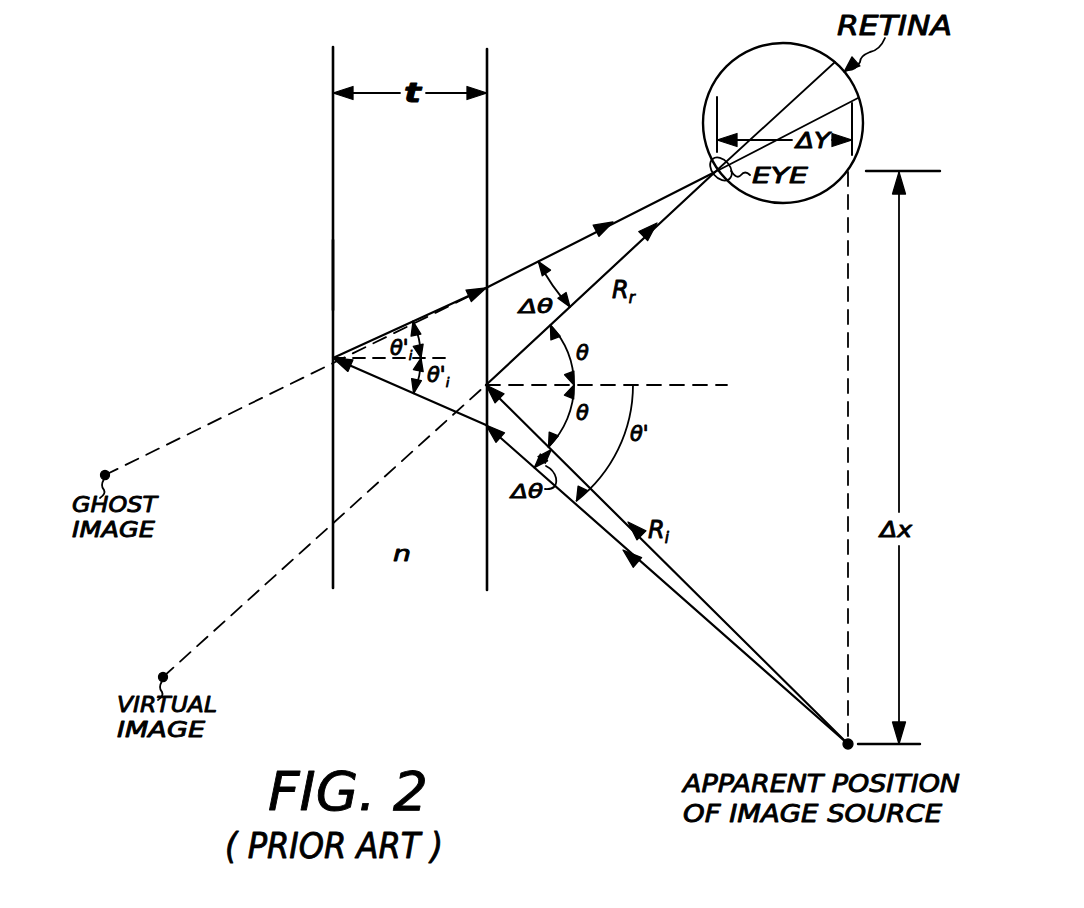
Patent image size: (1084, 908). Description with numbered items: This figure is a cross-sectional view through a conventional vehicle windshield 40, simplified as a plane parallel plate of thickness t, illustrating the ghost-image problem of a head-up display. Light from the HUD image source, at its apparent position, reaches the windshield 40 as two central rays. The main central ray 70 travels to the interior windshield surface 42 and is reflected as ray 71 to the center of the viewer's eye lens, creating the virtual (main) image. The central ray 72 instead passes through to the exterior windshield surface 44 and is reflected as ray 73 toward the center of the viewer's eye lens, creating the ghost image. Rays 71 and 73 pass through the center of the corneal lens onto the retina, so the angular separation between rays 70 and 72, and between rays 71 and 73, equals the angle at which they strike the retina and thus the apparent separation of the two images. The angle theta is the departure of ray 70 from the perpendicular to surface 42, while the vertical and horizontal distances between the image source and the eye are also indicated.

The conventional windshield 40 is at (363, 200).
The interior windshield surface 42 is at (488, 569).
The exterior windshield surface 44 is at (333, 276).
The main central ray 70 is at (612, 510).
The reflected ray 71 is at (634, 252).
The central ray 72 is at (605, 527).
The ghost-image ray 73 is at (578, 244).